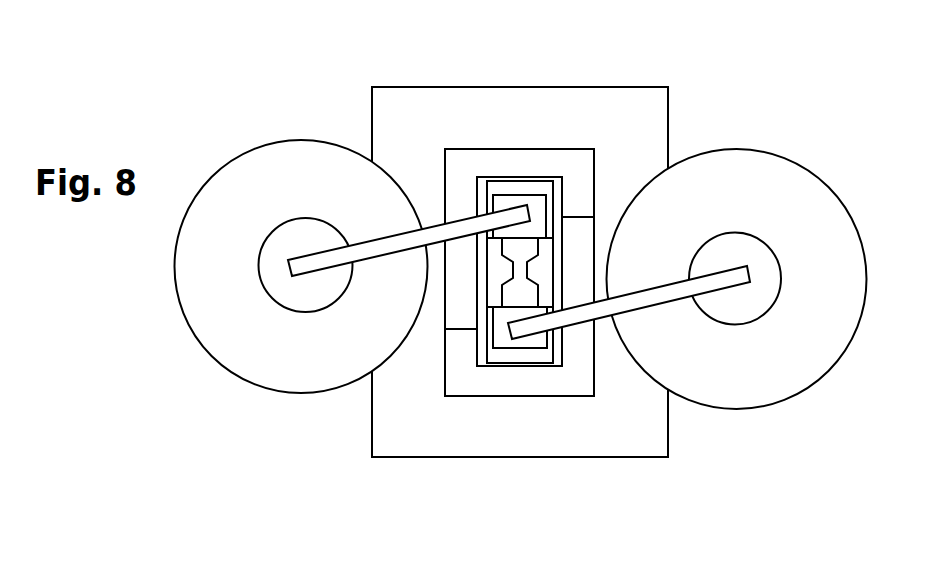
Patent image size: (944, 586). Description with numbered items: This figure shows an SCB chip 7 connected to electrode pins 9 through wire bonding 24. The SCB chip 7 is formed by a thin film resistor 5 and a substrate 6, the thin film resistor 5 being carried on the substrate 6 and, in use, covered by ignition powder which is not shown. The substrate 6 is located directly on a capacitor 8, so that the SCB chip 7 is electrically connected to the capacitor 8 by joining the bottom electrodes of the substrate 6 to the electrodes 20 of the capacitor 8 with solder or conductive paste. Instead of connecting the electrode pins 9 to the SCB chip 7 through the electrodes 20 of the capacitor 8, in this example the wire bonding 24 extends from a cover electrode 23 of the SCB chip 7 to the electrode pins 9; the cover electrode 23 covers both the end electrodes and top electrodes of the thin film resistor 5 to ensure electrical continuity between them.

The thin film resistor 5 is at (520, 272).
The substrate 6 is at (480, 336).
The SCB chip 7 is at (361, 271).
The capacitor 8 is at (573, 233).
The electrode pins 9 is at (762, 258).
The electrodes of the capacitor 20 is at (490, 162).
The cover electrode 23 is at (505, 338).
The wire bonding 24 is at (602, 316).